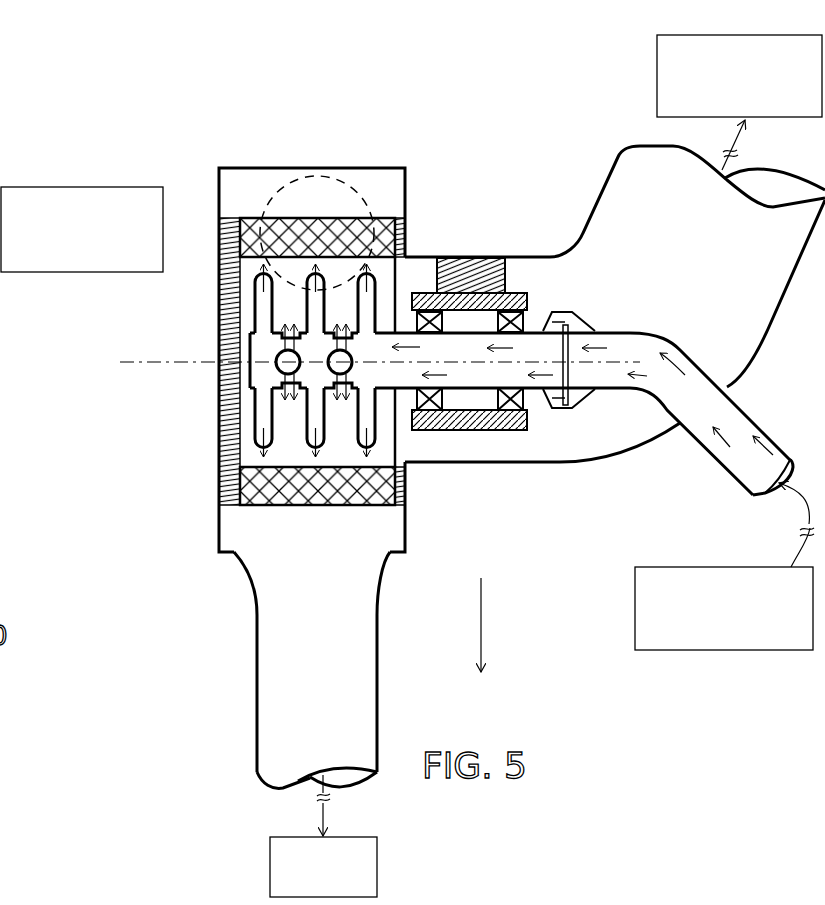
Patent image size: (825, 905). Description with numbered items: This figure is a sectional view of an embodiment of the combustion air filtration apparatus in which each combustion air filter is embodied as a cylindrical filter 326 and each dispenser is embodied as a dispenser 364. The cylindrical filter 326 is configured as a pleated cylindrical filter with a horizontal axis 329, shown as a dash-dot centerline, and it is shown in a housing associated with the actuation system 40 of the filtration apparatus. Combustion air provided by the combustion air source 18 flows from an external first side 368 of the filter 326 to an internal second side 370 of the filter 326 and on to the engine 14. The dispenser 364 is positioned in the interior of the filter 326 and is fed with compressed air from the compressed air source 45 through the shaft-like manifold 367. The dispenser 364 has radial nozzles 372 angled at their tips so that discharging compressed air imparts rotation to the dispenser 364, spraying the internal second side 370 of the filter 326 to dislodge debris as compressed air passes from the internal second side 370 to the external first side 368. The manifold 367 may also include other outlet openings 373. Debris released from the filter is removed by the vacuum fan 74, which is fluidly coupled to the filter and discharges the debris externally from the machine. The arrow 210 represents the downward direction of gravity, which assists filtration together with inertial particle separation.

The engine 14 is at (657, 90).
The combustion air source 18 is at (52, 187).
The actuation system 40 is at (219, 523).
The compressed air source 45 is at (712, 650).
The vacuum fan 74 is at (377, 878).
The arrow 210 is at (481, 620).
The cylindrical filter 326 is at (256, 532).
The horizontal axis 329 is at (123, 372).
The dispenser 364 is at (343, 280).
The manifold 367 is at (272, 333).
The external first side 368 is at (353, 507).
The internal second side 370 is at (398, 452).
The radial nozzles 372 is at (255, 294).
The outlet openings 373 is at (284, 389).